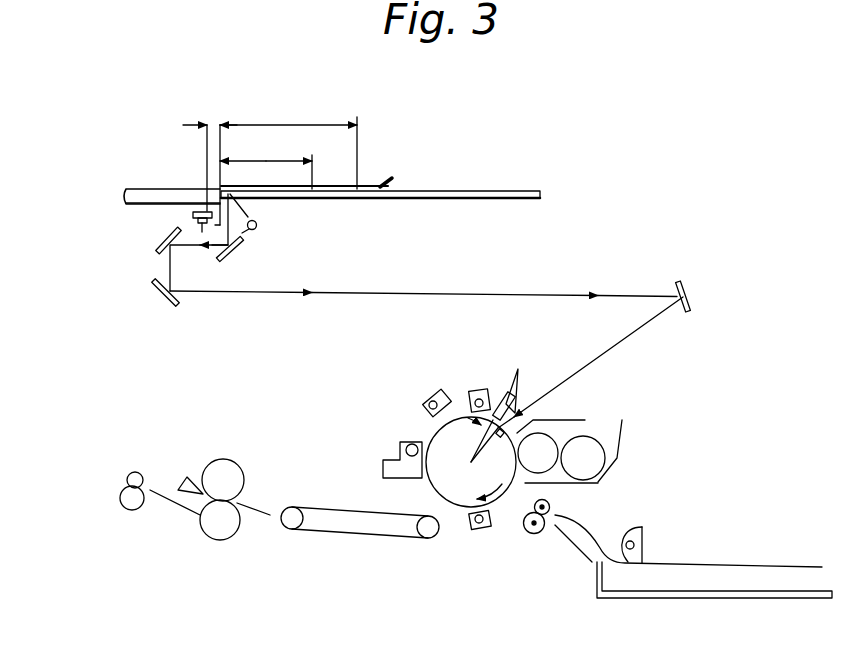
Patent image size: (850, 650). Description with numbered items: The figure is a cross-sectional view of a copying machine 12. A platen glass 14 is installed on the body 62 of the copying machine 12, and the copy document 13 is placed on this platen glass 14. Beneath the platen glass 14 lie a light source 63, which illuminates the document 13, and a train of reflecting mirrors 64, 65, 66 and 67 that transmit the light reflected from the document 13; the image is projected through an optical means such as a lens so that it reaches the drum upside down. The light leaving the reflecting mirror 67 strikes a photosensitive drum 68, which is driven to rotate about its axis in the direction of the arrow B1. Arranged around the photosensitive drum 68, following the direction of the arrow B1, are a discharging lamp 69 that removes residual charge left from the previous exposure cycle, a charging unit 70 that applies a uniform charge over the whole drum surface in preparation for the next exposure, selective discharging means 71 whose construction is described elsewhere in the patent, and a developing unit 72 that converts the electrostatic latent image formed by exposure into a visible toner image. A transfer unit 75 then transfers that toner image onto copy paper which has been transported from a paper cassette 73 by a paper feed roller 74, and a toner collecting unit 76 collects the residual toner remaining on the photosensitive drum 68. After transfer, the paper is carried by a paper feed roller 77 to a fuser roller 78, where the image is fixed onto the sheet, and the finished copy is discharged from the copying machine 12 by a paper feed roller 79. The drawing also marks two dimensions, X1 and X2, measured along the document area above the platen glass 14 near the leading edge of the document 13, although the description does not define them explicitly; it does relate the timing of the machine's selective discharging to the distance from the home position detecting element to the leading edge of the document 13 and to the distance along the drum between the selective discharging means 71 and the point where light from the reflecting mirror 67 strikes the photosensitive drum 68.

The copying machine 12 is at (711, 174).
The copy document 13 is at (381, 184).
The platen glass 14 is at (459, 192).
The body 62 is at (158, 190).
The light source 63 is at (258, 225).
The reflecting mirror 64 is at (243, 247).
The reflecting mirror 65 is at (155, 243).
The reflecting mirror 66 is at (154, 291).
The reflecting mirror 67 is at (687, 288).
The photosensitive drum 68 is at (426, 489).
The discharging lamp 69 is at (431, 396).
The charging unit 70 is at (475, 391).
The selective discharging means 71 is at (507, 398).
The developing unit 72 is at (619, 402).
The paper cassette 73 is at (645, 598).
The paper feed roller 74 is at (543, 536).
The transfer unit 75 is at (471, 528).
The toner collecting unit 76 is at (385, 452).
The paper feed roller 77 is at (360, 539).
The fuser roller 78 is at (239, 456).
The paper feed roller 79 is at (143, 463).
The document length X1 is at (272, 161).
The document feed distance X2 is at (289, 127).
The drum rotation direction arrow B1 is at (503, 508).